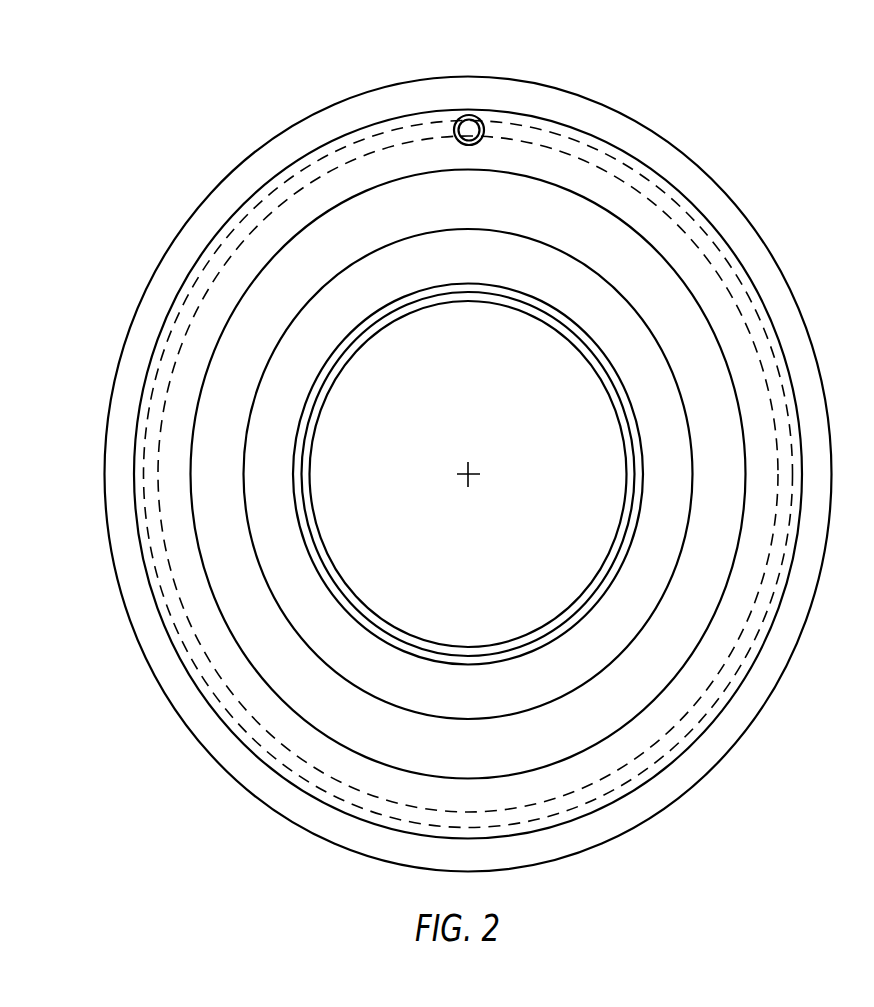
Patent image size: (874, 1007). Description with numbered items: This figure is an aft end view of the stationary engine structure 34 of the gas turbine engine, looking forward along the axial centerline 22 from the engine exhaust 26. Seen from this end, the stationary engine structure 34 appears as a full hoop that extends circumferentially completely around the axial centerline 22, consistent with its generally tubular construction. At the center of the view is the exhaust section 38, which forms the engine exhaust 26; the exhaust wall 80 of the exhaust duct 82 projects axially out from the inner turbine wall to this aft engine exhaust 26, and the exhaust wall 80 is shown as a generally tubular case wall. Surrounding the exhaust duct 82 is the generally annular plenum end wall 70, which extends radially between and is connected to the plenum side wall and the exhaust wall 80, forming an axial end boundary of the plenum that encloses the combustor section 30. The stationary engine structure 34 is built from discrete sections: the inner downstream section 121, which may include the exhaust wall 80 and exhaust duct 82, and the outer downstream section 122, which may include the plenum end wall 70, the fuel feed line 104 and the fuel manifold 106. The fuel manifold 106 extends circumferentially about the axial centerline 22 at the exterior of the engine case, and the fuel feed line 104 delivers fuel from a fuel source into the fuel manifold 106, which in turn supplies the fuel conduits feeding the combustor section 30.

The stationary engine structure 34 is at (750, 110).
The combustor section 30 is at (778, 238).
The outer downstream section 122 is at (96, 413).
The fuel manifold 106 is at (573, 139).
The fuel feed line 104 is at (467, 115).
The plenum end wall 70 is at (722, 498).
The exhaust section 38 is at (645, 398).
The exhaust duct 82 is at (610, 459).
The exhaust wall 80 is at (623, 488).
The engine exhaust 26 is at (317, 507).
The inner downstream section 121 is at (340, 420).
The axial centerline 22 is at (470, 477).